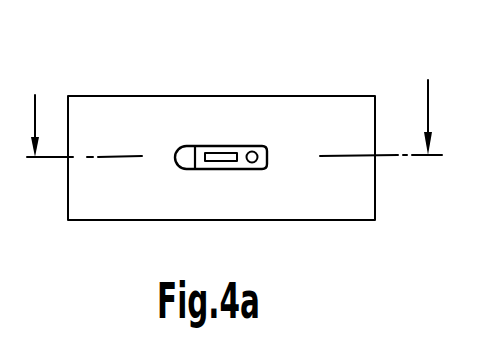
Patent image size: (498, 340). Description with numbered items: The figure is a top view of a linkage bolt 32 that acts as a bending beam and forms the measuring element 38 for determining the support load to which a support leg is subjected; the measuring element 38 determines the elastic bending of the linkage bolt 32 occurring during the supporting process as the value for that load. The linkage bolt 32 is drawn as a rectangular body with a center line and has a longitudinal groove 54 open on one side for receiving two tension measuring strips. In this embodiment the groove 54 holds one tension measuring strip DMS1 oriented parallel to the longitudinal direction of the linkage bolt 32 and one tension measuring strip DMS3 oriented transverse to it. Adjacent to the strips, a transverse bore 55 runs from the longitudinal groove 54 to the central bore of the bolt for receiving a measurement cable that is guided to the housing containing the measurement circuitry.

The linkage bolt 32 is at (234, 186).
The measuring element 38 is at (131, 197).
The longitudinal groove 54 is at (242, 162).
The transverse bore 55 is at (263, 151).
The tension measuring strip DMS1 is at (224, 152).
The tension measuring strip DMS3 is at (195, 170).